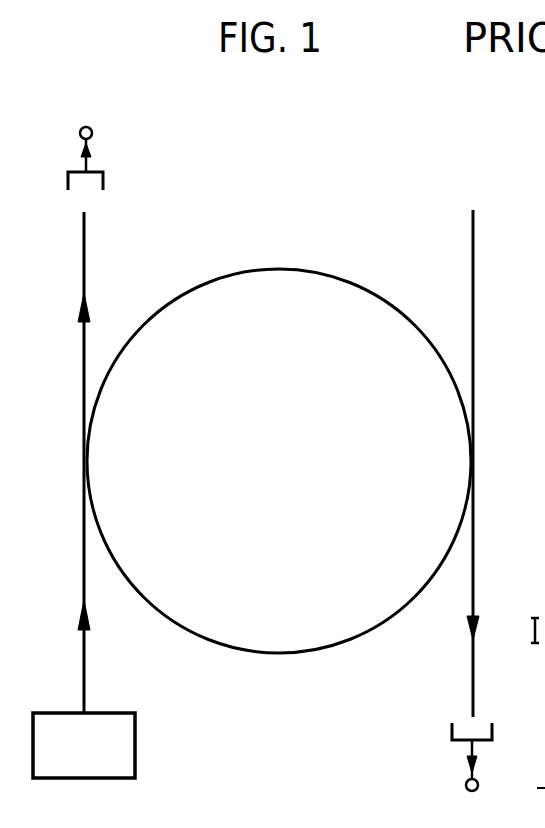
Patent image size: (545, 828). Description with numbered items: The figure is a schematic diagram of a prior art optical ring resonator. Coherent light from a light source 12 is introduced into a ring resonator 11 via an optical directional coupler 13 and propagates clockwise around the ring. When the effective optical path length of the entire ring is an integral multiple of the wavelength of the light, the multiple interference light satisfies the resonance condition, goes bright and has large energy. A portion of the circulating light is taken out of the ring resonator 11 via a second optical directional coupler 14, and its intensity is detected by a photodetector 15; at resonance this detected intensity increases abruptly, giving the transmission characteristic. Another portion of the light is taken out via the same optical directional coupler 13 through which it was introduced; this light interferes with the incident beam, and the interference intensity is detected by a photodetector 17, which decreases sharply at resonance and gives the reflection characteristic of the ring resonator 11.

The ring resonator 11 is at (168, 622).
The light source 12 is at (136, 733).
The optical directional coupler 13 is at (83, 462).
The optical directional coupler 14 is at (475, 457).
The photodetector 15 is at (492, 727).
The photodetector 17 is at (105, 172).